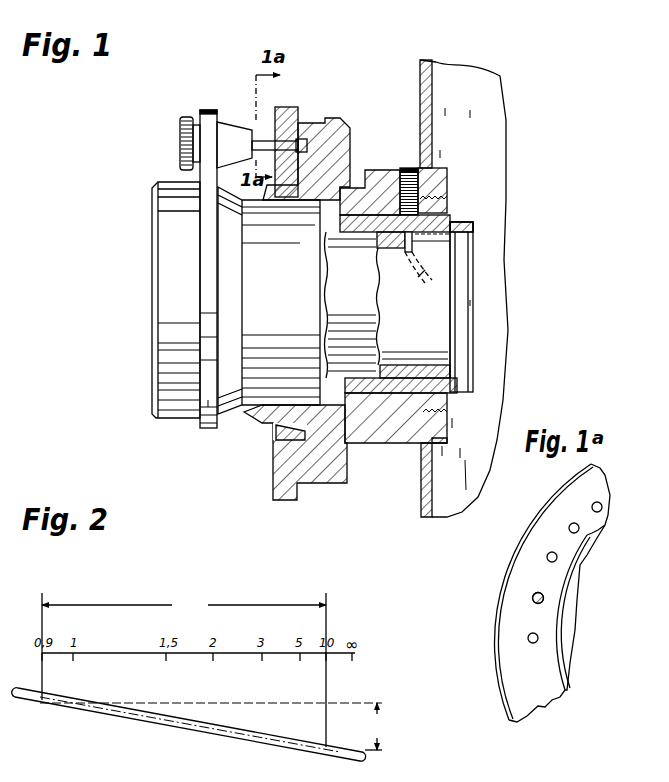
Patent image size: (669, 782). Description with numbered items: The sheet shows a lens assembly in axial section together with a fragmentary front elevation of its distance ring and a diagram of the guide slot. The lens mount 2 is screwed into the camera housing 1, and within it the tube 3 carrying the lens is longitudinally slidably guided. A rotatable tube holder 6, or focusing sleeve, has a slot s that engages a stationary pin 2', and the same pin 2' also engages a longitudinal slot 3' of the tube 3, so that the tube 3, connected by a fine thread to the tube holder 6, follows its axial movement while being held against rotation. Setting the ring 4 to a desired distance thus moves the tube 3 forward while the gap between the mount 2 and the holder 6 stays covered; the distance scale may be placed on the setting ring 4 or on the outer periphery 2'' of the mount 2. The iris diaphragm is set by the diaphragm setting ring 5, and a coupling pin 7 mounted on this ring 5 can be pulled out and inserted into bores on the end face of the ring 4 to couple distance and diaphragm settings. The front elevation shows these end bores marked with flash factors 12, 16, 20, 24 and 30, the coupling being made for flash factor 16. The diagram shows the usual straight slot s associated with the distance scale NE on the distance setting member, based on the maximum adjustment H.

In FIG. 1, the camera housing 1 is at (494, 112).
In FIG. 1, the lens mount 2 is at (411, 305).
In FIG. 1, the pin 2' is at (408, 267).
In FIG. 1, the outer periphery of the lens mount 2'' is at (297, 287).
In FIG. 1, the tube 3 is at (435, 303).
In FIG. 1, the longitudinal slot 3' is at (477, 249).
In FIG. 1, the setting ring 4 is at (299, 128).
In FIG. 1A, the setting ring 4 is at (515, 658).
In FIG. 1, the diaphragm setting ring 5 is at (208, 428).
In FIG. 1, the tube holder 6 is at (457, 226).
In FIG. 1, the coupling pin 7 is at (260, 141).
In FIG. 1A, the coupling pin 7 is at (522, 572).
In FIG. 1, the slot s is at (418, 277).
In FIG. 2, the slot s is at (177, 727).
In FIG. 1A, the flash factor 12 is at (521, 632).
In FIG. 1A, the flash factor 16 is at (525, 591).
In FIG. 1A, the flash factor 20 is at (541, 548).
In FIG. 1A, the flash factor 24 is at (565, 518).
In FIG. 1A, the flash factor 30 is at (589, 496).
In FIG. 2, the distance scale NE is at (184, 605).
In FIG. 2, the maximum adjustment H is at (377, 726).